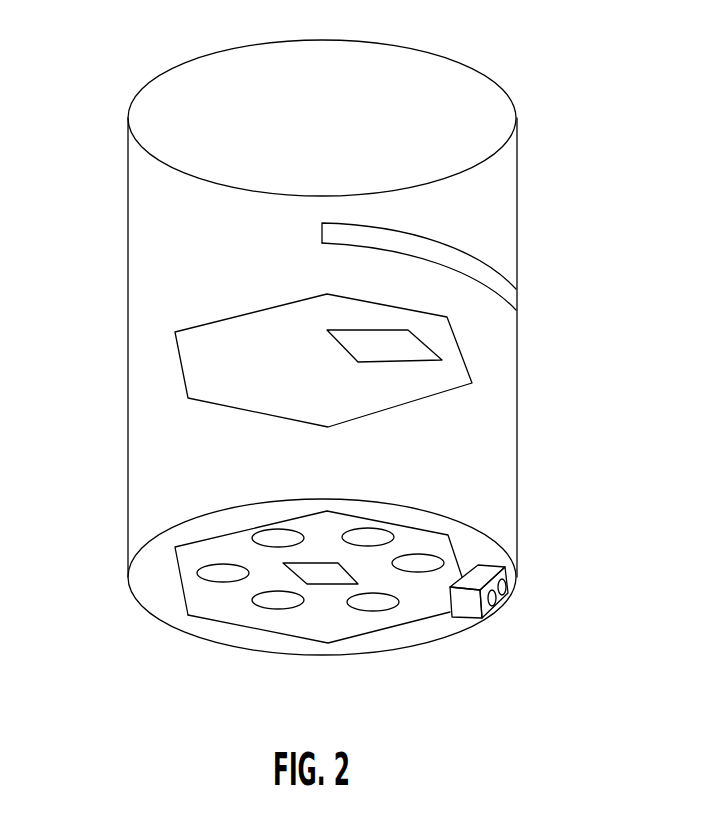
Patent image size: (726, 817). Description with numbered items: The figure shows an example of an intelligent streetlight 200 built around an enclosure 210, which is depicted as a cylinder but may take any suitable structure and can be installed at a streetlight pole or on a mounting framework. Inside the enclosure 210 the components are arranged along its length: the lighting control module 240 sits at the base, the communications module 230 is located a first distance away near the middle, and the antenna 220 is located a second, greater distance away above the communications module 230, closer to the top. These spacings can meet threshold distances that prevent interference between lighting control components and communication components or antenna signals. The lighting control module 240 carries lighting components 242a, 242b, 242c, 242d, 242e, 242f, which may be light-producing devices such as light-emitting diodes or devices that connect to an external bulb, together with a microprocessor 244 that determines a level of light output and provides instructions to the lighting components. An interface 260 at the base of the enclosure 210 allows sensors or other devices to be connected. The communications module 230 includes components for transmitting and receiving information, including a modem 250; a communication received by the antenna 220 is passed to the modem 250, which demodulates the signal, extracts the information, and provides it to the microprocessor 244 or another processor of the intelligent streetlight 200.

The intelligent streetlight 200 is at (91, 70).
The enclosure 210 is at (457, 62).
The antenna 220 is at (483, 267).
The communications module 230 is at (197, 365).
The modem 250 is at (403, 347).
The lighting control module 240 is at (217, 612).
The microprocessor 244 is at (208, 561).
The lighting component 242a is at (427, 562).
The lighting component 242b is at (375, 538).
The lighting component 242c is at (278, 540).
The lighting component 242d is at (217, 572).
The lighting component 242e is at (273, 605).
The lighting component 242f is at (373, 607).
The interface 260 is at (490, 617).